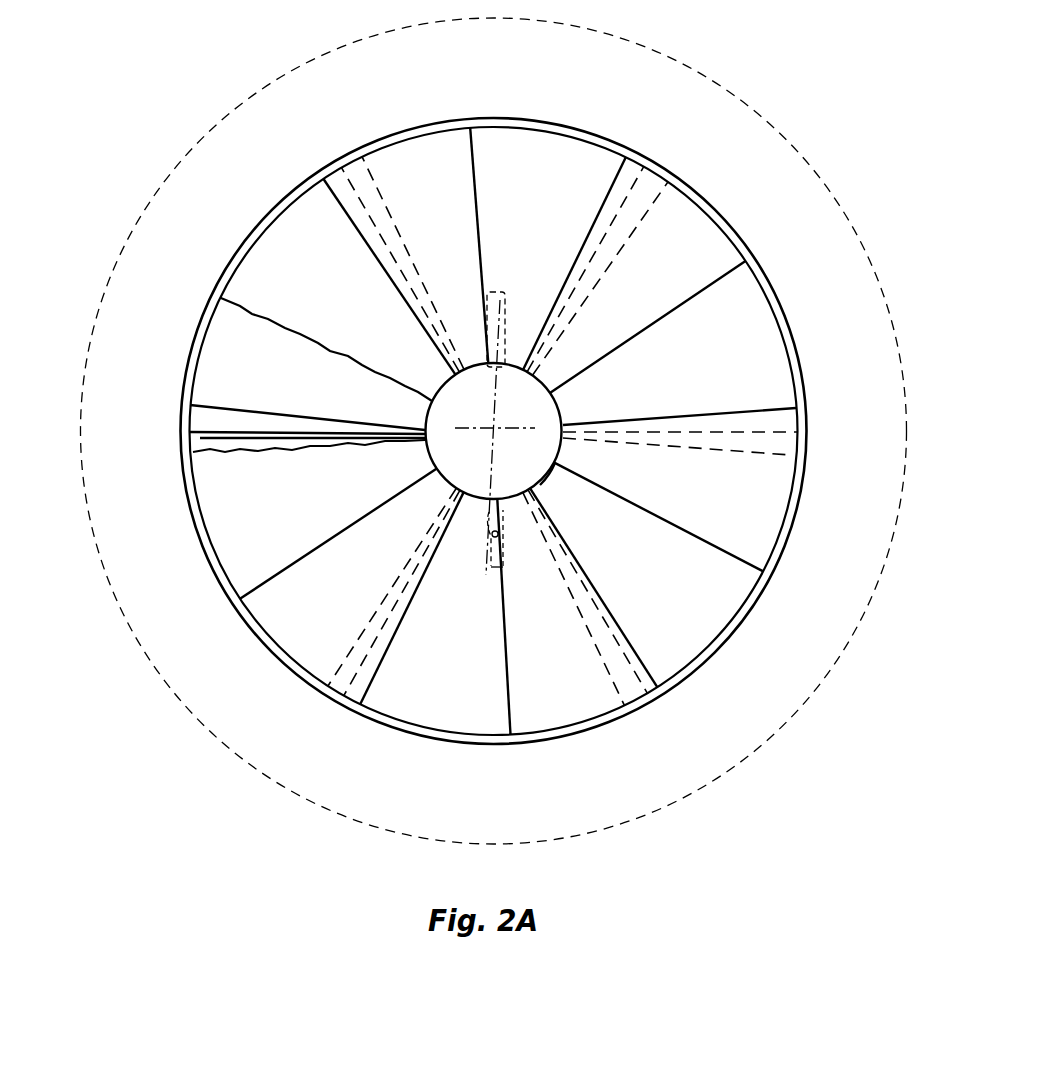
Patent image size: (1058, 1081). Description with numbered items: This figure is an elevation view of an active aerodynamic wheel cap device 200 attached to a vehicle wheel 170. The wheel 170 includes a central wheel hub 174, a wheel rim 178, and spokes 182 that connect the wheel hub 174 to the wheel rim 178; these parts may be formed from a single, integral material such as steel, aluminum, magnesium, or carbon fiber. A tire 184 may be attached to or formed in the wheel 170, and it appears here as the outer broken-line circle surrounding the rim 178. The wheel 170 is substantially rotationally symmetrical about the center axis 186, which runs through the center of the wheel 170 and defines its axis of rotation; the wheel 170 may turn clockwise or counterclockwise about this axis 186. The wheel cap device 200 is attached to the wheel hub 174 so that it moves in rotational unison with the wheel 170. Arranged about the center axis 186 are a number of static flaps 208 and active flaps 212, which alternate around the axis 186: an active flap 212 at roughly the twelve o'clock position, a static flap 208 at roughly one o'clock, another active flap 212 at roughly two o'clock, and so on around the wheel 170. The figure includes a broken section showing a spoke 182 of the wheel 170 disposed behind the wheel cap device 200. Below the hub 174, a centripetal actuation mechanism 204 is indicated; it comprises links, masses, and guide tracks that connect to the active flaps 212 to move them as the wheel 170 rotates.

The vehicle wheel 170 is at (192, 88).
The tire 184 is at (118, 258).
The wheel rim 178 is at (802, 538).
The static flap 208 is at (694, 242).
The spoke 182 is at (208, 434).
The active flap 212 is at (553, 172).
The active aerodynamic wheel cap device 200 is at (450, 450).
The central wheel hub 174 is at (556, 494).
The center axis 186 is at (483, 414).
The centripetal actuation mechanism 204 is at (490, 550).